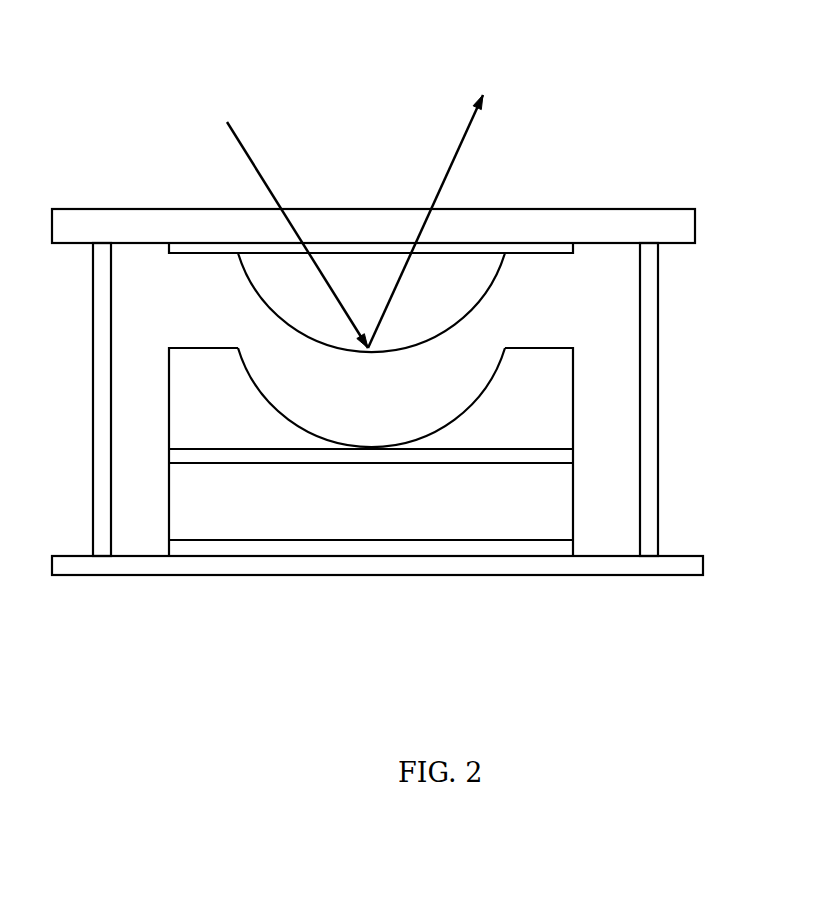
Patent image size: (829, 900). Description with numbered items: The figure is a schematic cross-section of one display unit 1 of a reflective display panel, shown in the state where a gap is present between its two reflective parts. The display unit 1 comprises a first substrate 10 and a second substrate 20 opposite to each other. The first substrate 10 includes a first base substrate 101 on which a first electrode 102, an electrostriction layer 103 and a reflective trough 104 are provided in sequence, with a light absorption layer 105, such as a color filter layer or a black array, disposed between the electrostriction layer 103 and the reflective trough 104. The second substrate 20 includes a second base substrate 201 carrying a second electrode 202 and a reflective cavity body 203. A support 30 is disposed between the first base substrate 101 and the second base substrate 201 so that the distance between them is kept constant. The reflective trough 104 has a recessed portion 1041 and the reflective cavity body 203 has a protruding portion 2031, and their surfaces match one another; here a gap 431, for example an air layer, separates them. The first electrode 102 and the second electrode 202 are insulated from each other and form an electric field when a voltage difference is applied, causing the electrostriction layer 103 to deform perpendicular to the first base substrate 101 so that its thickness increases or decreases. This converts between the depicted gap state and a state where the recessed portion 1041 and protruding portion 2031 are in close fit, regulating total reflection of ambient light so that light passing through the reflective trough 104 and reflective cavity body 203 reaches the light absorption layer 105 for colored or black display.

The display unit 1 is at (337, 137).
The first substrate 10 is at (407, 542).
The first base substrate 101 is at (372, 568).
The first electrode 102 is at (342, 549).
The electrostriction layer 103 is at (300, 518).
The reflective trough 104 is at (465, 540).
The recessed portion 1041 is at (487, 392).
The light absorption layer 105 is at (244, 455).
The second substrate 20 is at (408, 231).
The second base substrate 201 is at (529, 228).
The second electrode 202 is at (473, 248).
The reflective cavity body 203 is at (501, 231).
The protruding portion 2031 is at (483, 297).
The support 30 is at (651, 318).
The gap 431 is at (458, 342).